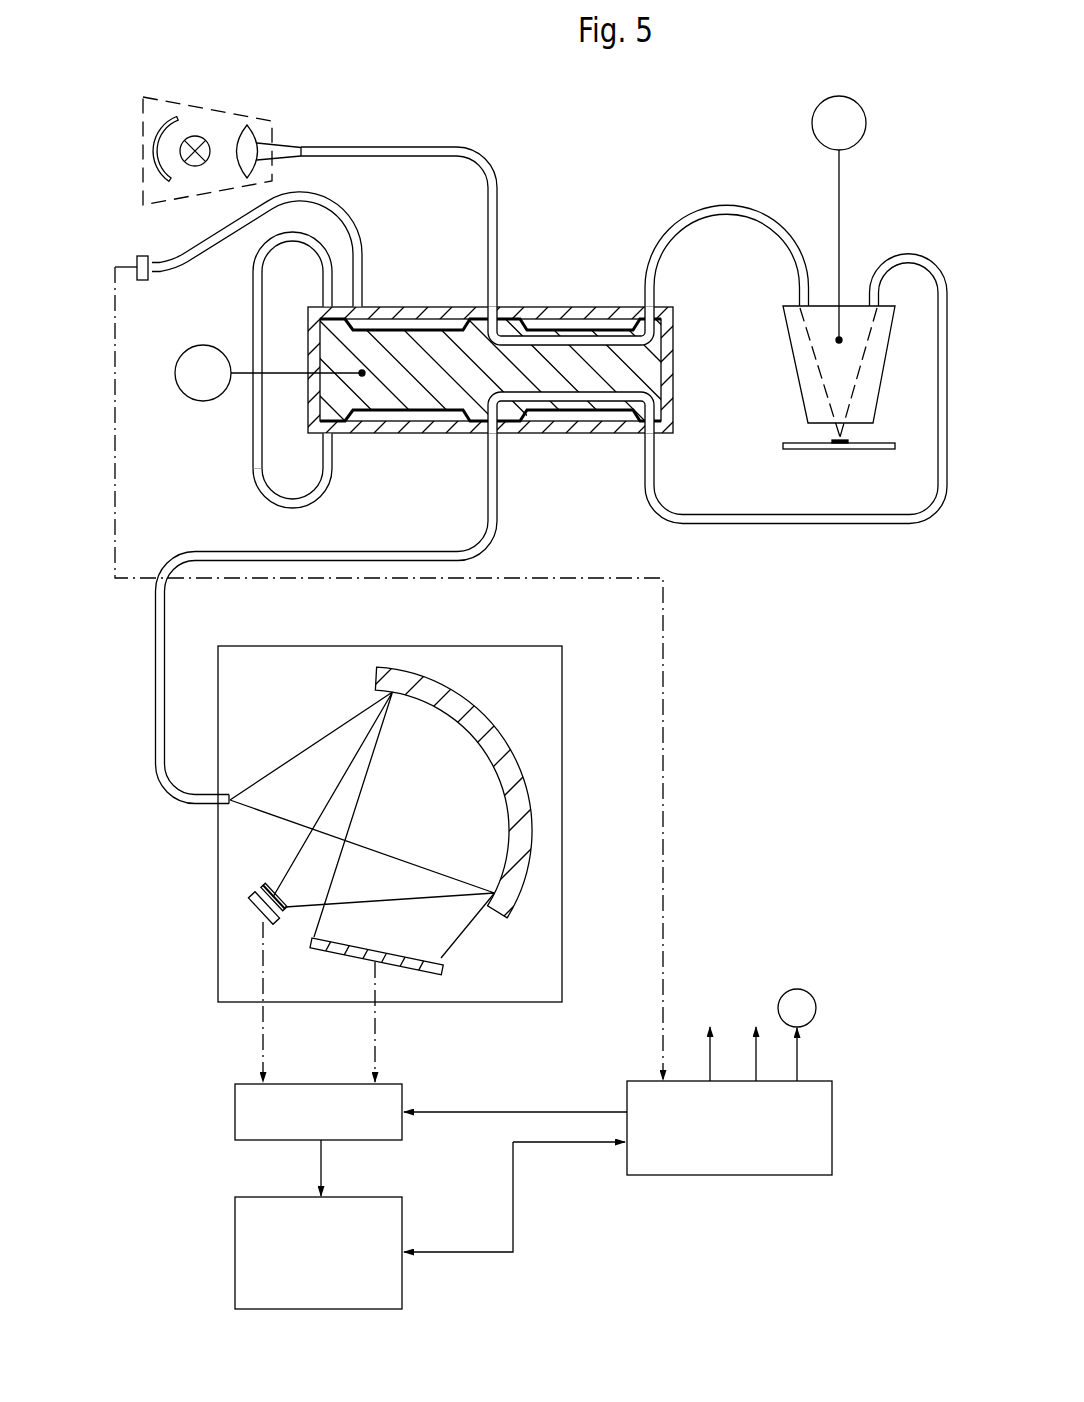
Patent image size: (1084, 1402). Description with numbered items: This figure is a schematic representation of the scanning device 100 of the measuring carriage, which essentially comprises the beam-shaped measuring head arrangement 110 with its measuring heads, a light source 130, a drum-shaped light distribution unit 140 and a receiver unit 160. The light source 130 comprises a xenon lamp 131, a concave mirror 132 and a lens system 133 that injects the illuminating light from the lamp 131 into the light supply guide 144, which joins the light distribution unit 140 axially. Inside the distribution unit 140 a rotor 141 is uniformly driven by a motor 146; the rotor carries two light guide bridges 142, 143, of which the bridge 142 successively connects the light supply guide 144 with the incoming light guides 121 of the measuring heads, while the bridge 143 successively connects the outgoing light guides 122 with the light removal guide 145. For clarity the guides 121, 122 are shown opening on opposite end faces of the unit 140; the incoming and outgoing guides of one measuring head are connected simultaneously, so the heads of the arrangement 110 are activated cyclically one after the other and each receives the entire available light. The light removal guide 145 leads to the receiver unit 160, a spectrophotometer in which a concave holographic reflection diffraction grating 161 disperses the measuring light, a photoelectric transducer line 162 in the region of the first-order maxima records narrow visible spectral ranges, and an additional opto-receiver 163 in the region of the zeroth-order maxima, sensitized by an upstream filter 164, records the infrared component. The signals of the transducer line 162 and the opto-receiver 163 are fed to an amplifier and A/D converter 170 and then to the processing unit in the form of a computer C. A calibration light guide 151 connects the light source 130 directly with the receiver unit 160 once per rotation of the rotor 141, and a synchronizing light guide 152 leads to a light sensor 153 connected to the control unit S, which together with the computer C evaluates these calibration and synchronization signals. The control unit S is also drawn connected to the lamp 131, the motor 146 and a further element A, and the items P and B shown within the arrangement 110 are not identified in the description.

The scanning device 100 is at (795, 747).
The measuring head arrangement 110 is at (798, 384).
The incoming light guide 121 is at (800, 258).
The outgoing light guide 122 is at (903, 255).
The light source 130 is at (197, 110).
The xenon lamp 131 is at (181, 156).
The concave mirror 132 is at (164, 128).
The lens system 133 is at (250, 152).
The light distribution unit 140 is at (584, 288).
The rotor 141 is at (417, 395).
The light guide bridge 142 is at (533, 348).
The light guide bridge 143 is at (610, 397).
The light supply guide 144 is at (489, 172).
The light removal guide 145 is at (492, 475).
The motor 146 is at (197, 401).
The calibration light guide 151 is at (256, 298).
The synchronizing light guide 152 is at (361, 262).
The light sensor 153 is at (143, 256).
The receiver unit 160 is at (521, 633).
The concave holographic reflection diffraction grating 161 is at (490, 742).
The photoelectric transducer line 162 is at (398, 950).
The additional opto-receiver 163 is at (256, 910).
The filter 164 is at (272, 885).
The amplifier and A/D converter 170 is at (250, 1112).
The drive A is at (839, 219).
The sample P is at (846, 440).
The sample carrier B is at (815, 449).
The control unit S is at (849, 1134).
The computer C is at (248, 1256).